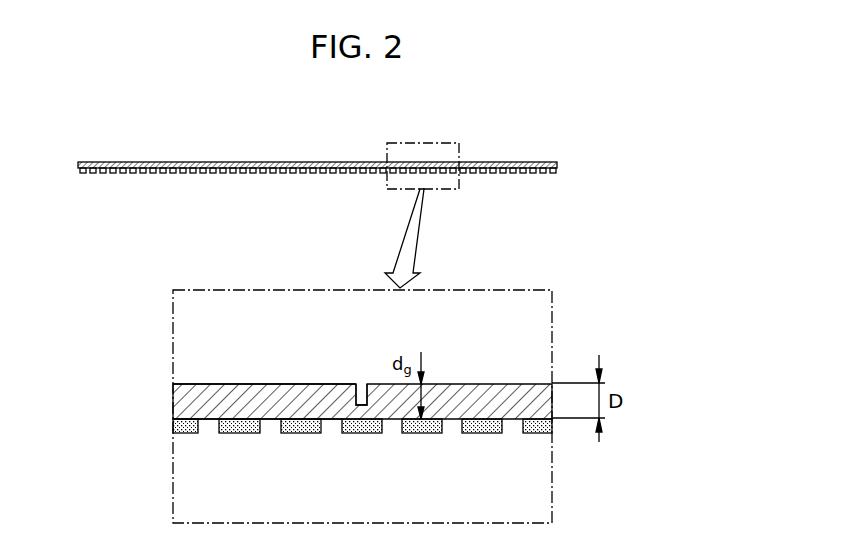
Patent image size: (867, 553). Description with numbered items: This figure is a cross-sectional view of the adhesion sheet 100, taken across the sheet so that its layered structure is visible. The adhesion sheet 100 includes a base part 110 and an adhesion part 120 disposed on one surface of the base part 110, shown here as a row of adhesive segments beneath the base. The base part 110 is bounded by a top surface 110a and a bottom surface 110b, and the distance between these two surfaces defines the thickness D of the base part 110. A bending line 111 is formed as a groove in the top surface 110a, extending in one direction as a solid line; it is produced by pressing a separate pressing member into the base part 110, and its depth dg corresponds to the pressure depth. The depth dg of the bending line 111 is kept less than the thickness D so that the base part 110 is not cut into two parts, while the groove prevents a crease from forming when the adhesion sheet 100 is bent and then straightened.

The adhesion sheet 100 is at (681, 113).
The base part 110 is at (490, 386).
The top surface 110a is at (180, 384).
The bottom surface 110b is at (180, 421).
The bending line 111 is at (362, 384).
The adhesion part 120 is at (482, 442).